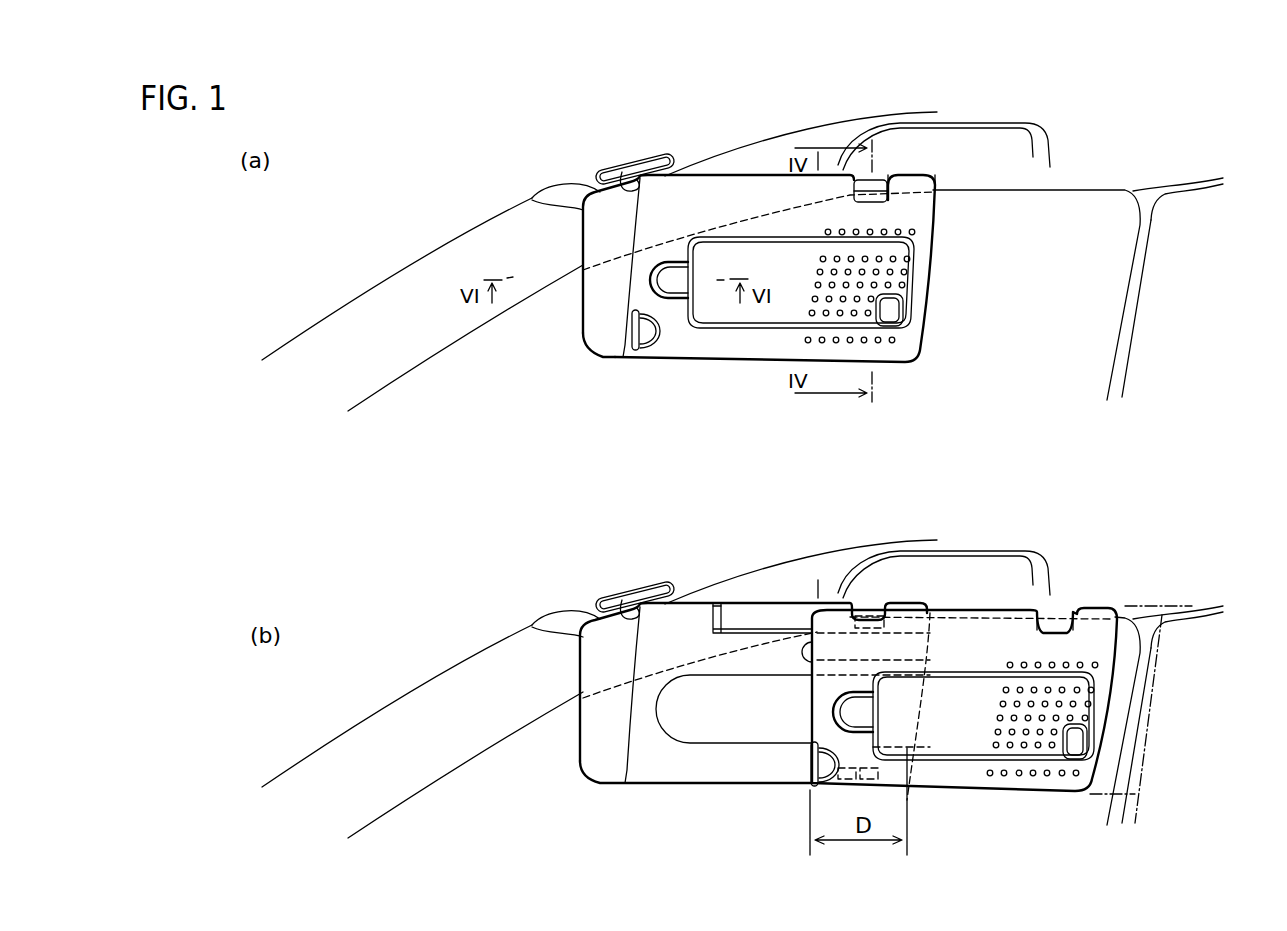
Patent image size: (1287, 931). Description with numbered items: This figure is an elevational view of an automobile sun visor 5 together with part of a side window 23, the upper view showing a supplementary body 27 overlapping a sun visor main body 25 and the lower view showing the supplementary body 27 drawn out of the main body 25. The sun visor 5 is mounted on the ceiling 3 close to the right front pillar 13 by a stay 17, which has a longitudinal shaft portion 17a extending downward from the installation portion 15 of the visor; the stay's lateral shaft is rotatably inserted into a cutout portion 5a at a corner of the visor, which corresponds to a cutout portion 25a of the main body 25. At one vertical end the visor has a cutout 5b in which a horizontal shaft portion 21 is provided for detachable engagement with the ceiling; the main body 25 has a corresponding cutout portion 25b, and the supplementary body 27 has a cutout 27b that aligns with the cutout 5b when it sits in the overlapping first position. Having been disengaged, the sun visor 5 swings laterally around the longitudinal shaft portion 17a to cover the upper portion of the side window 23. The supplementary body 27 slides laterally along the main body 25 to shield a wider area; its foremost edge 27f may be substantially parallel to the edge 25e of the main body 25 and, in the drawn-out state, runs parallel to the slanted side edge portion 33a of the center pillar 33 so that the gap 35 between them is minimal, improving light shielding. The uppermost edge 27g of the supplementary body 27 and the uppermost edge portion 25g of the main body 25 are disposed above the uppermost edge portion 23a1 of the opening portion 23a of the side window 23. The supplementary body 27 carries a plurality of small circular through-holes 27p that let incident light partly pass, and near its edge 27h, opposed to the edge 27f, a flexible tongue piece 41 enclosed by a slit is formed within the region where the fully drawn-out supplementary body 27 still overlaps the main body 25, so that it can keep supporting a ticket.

The ceiling 3 is at (719, 123).
The sun visor 5 is at (680, 430).
The cutout portion 5a is at (545, 387).
The cutout 5b is at (895, 197).
The right front pillar 13 is at (430, 353).
The installation portion 15 is at (650, 152).
The stay 17 is at (615, 357).
The longitudinal shaft portion 17a is at (622, 176).
The horizontal shaft portion 21 is at (883, 179).
The side window 23 is at (790, 442).
The opening portion 23a is at (967, 349).
The uppermost edge portion 23a1 is at (982, 193).
The sun visor main body 25 is at (610, 352).
The cutout portion 25a is at (532, 196).
The cutout portion 25b is at (873, 616).
The edge 25e is at (952, 672).
The uppermost edge portion 25g is at (767, 602).
The supplementary body 27 is at (673, 350).
The cutout 27b is at (1058, 620).
The edge 27f is at (921, 280).
The uppermost edge 27g is at (768, 174).
The edge 27h is at (810, 700).
The small holes 27p is at (896, 341).
The center pillar 33 is at (1192, 187).
The side edge portion 33a is at (1132, 252).
The gap 35 is at (1128, 657).
The tongue piece 41 is at (850, 712).